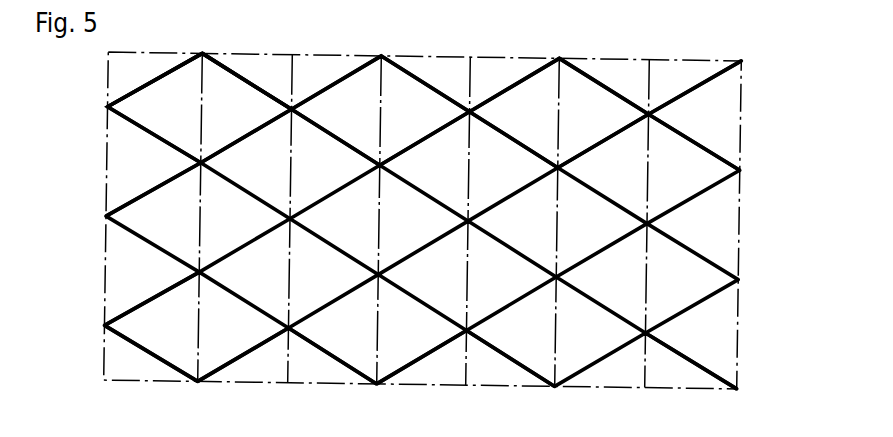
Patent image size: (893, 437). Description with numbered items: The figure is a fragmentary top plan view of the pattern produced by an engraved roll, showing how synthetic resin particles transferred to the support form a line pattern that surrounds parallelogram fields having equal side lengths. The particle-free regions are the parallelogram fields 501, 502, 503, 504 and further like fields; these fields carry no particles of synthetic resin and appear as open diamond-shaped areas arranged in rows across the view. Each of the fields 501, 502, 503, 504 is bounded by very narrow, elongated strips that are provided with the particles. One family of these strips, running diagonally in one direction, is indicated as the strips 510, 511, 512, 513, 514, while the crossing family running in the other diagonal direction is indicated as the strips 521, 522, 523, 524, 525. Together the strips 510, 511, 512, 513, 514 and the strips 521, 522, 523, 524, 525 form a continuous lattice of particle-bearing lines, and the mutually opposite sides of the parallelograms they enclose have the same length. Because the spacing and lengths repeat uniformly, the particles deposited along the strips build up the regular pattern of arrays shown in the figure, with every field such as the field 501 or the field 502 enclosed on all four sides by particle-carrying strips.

The parallelogram field 501 is at (253, 110).
The parallelogram field 502 is at (420, 107).
The parallelogram field 503 is at (575, 105).
The parallelogram field 504 is at (715, 112).
The narrow elongated strip 510 is at (280, 102).
The narrow elongated strip 511 is at (677, 353).
The narrow elongated strip 512 is at (527, 367).
The narrow elongated strip 513 is at (347, 363).
The narrow elongated strip 514 is at (159, 355).
The narrow elongated strip 521 is at (173, 70).
The narrow elongated strip 522 is at (137, 195).
The narrow elongated strip 523 is at (127, 305).
The narrow elongated strip 524 is at (247, 352).
The narrow elongated strip 525 is at (438, 352).